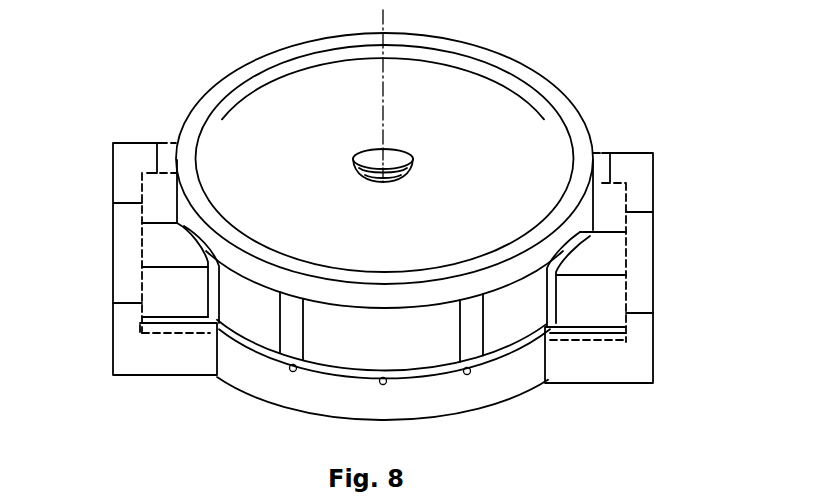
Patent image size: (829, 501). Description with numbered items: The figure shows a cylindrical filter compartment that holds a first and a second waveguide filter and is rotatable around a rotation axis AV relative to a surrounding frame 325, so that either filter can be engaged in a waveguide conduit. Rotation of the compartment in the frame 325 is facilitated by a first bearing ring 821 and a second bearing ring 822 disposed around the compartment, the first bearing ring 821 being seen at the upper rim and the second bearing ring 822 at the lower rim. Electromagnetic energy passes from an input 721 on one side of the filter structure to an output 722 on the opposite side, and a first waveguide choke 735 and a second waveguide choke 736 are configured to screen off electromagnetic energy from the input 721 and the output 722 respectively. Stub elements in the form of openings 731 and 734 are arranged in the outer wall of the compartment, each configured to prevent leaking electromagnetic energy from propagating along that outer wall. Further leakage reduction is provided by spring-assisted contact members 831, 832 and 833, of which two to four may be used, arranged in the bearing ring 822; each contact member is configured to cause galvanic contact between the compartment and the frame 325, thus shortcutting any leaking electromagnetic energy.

The frame 325 is at (213, 80).
The first bearing ring 821 is at (538, 95).
The first waveguide choke 735 is at (637, 173).
The second waveguide choke 736 is at (130, 162).
The output 722 is at (152, 293).
The input 721 is at (605, 293).
The opening 731 is at (290, 323).
The opening 734 is at (462, 332).
The second bearing ring 822 is at (513, 353).
The spring-assisted contact member 831 is at (288, 372).
The spring-assisted contact member 832 is at (378, 383).
The spring-assisted contact member 833 is at (463, 373).
The rotation axis AV is at (402, 80).